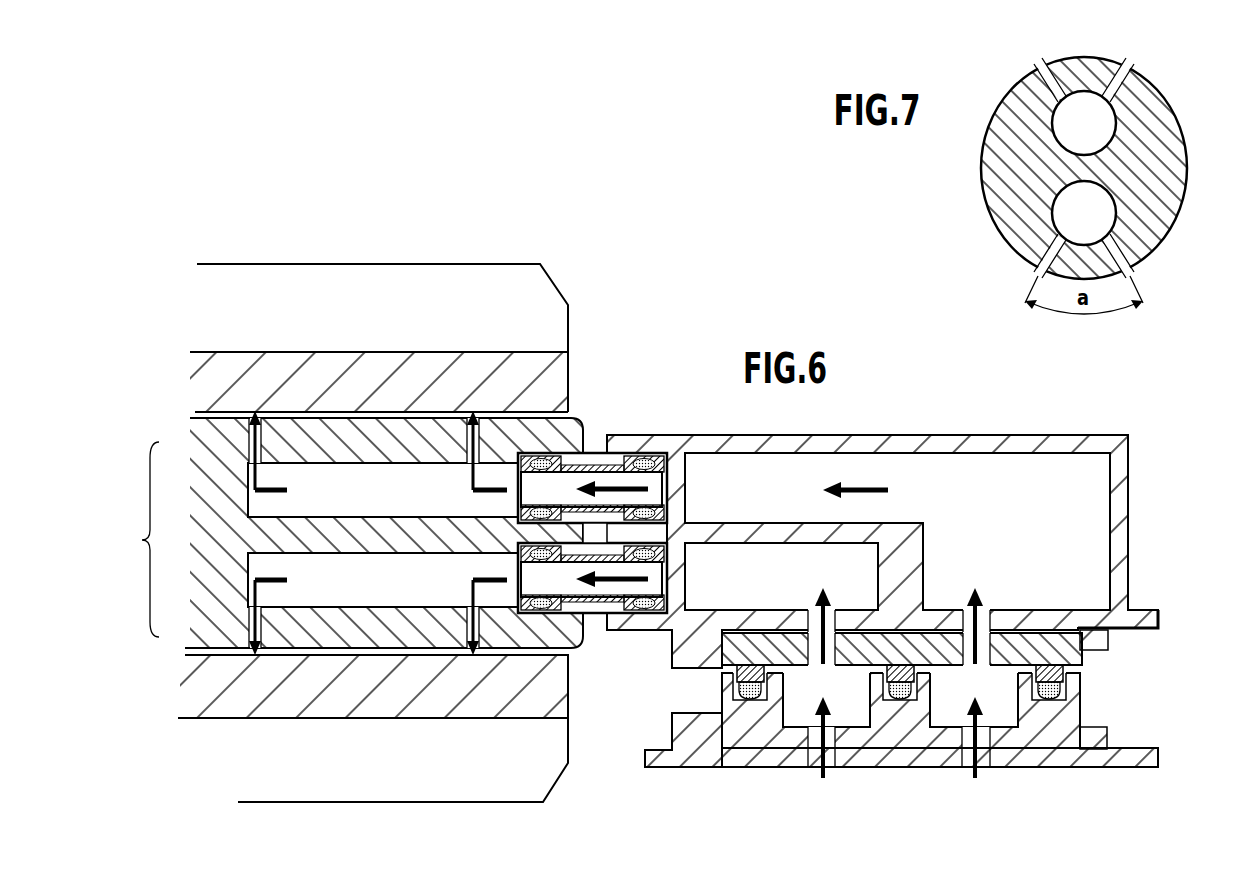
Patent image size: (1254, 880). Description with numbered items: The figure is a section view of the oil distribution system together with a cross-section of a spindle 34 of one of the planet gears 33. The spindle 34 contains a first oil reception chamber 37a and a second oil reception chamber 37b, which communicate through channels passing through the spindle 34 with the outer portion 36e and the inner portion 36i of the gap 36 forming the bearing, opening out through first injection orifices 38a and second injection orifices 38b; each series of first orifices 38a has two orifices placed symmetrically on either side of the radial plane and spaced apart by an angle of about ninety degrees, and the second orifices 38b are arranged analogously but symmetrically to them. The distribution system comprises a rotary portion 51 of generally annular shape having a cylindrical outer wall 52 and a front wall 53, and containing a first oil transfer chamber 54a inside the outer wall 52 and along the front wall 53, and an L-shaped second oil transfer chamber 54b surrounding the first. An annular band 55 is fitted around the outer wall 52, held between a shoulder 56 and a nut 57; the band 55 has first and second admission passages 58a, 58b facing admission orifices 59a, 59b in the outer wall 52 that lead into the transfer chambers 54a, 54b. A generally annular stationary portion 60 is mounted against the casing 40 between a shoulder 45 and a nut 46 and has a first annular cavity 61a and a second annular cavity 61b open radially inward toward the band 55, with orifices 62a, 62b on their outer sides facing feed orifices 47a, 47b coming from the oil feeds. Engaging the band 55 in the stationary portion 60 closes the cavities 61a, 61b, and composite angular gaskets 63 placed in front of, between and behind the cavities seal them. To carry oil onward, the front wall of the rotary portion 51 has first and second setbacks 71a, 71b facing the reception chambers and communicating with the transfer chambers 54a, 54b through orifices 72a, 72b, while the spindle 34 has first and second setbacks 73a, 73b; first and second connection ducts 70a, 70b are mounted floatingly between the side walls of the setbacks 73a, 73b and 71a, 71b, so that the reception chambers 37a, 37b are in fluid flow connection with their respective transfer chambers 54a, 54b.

In FIG. 6, the planet gear 33 is at (337, 368).
In FIG. 6, the spindle 34 is at (185, 540).
In FIG. 7, the spindle 34 is at (1158, 163).
In FIG. 6, the gap 36 is at (137, 539).
In FIG. 6, the inner portion of the gap 36i is at (212, 420).
In FIG. 6, the outer portion of the gap 36e is at (212, 650).
In FIG. 6, the first oil reception chamber 37a is at (352, 588).
In FIG. 7, the first oil reception chamber 37a is at (1068, 224).
In FIG. 6, the second oil reception chamber 37b is at (352, 498).
In FIG. 7, the second oil reception chamber 37b is at (1068, 134).
In FIG. 6, the first injection orifices 38a is at (262, 596).
In FIG. 7, the first injection orifices 38a is at (1040, 256).
In FIG. 6, the second injection orifices 38b is at (262, 472).
In FIG. 7, the second injection orifices 38b is at (1038, 63).
In FIG. 6, the casing 40 is at (1110, 762).
In FIG. 6, the shoulder 45 is at (681, 725).
In FIG. 6, the nut 46 is at (1103, 741).
In FIG. 6, the first feed orifice 47a is at (831, 752).
In FIG. 6, the second feed orifice 47b is at (965, 752).
In FIG. 6, the rotary portion 51 is at (1122, 489).
In FIG. 6, the cylindrical outer wall 52 is at (1133, 632).
In FIG. 6, the front wall 53 is at (601, 437).
In FIG. 6, the first oil transfer chamber 54a is at (731, 601).
In FIG. 6, the second oil transfer chamber 54b is at (998, 514).
In FIG. 6, the annular band 55 is at (1066, 641).
In FIG. 6, the housing step 56 is at (686, 665).
In FIG. 6, the nut 57 is at (1096, 651).
In FIG. 6, the first admission passages 58a is at (832, 640).
In FIG. 6, the second admission passages 58b is at (967, 638).
In FIG. 6, the first admission orifices 59a is at (814, 620).
In FIG. 6, the second admission orifices 59b is at (985, 620).
In FIG. 6, the stationary portion 60 is at (1060, 712).
In FIG. 6, the first annular cavity 61a is at (812, 694).
In FIG. 6, the second annular cavity 61b is at (959, 694).
In FIG. 6, the orifice of the first cavity 62a is at (812, 764).
In FIG. 6, the orifice of the second cavity 62b is at (986, 764).
In FIG. 6, the angular gaskets 63 is at (1050, 662).
In FIG. 6, the first connection duct 70a is at (597, 606).
In FIG. 6, the second connection duct 70b is at (594, 456).
In FIG. 6, the first setback 71a is at (617, 628).
In FIG. 6, the second setback 71b is at (617, 450).
In FIG. 6, the orifice 72a is at (673, 556).
In FIG. 6, the orifice 72b is at (673, 466).
In FIG. 6, the first setback 73a is at (581, 600).
In FIG. 6, the second setback 73b is at (581, 470).